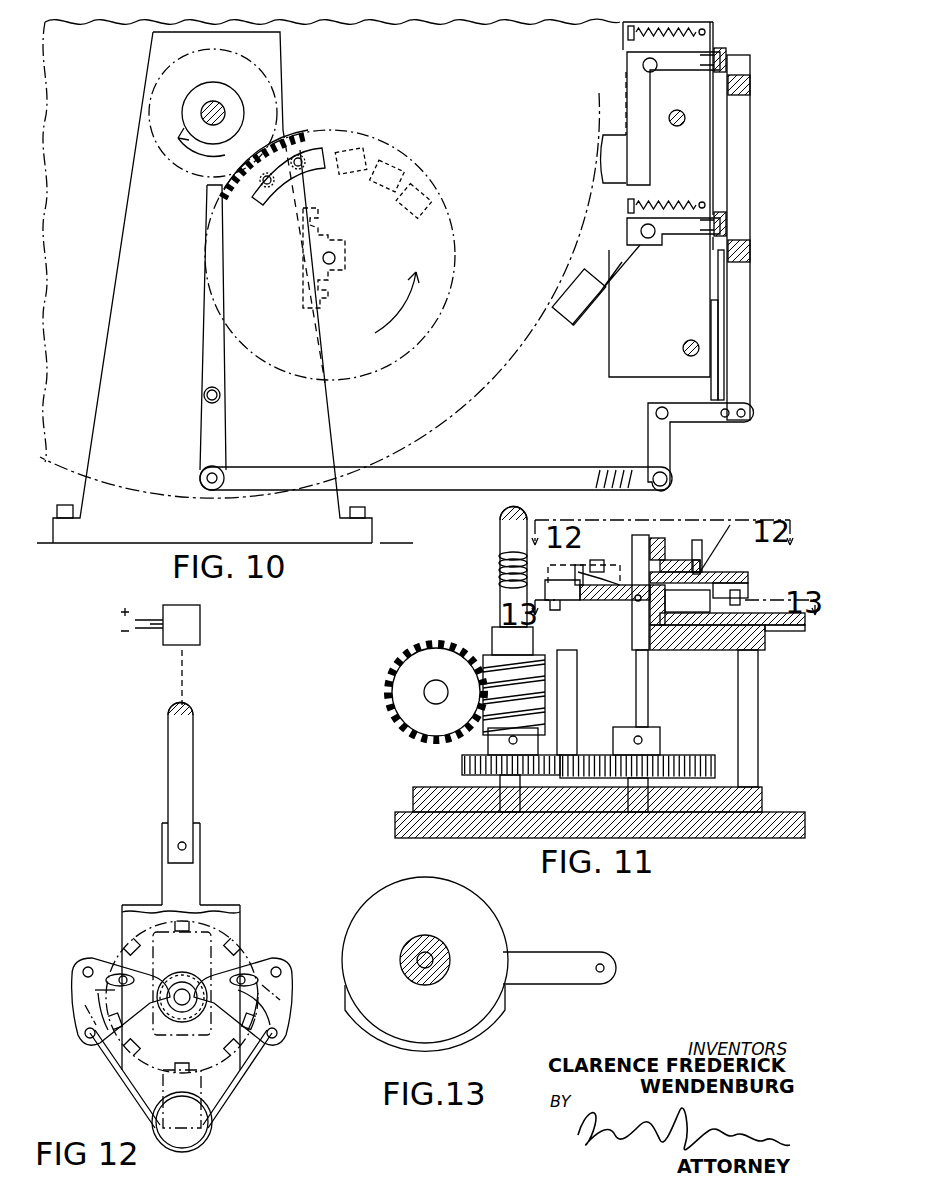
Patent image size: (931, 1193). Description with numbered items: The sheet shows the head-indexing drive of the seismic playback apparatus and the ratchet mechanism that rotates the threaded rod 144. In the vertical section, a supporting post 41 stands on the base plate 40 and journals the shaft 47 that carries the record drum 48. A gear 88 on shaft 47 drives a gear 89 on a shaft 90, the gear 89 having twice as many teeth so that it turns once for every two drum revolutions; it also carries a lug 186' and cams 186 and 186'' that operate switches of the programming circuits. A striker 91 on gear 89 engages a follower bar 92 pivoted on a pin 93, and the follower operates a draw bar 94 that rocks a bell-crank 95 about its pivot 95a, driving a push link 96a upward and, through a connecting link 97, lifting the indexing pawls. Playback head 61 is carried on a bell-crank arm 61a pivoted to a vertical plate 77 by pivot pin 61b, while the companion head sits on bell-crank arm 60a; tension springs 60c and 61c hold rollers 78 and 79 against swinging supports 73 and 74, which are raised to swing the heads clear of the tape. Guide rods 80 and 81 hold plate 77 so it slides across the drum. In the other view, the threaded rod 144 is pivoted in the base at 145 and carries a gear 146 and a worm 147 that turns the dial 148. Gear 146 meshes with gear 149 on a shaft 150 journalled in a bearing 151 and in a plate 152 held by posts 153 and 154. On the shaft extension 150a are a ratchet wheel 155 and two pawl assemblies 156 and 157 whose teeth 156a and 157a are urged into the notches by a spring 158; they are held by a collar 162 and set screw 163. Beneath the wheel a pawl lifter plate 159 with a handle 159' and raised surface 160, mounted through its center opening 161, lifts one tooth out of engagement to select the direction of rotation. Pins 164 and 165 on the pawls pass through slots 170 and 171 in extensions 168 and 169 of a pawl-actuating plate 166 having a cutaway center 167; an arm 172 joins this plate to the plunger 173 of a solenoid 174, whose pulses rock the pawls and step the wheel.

In FIG. 10, the base plate 40 is at (400, 543).
In FIG. 11, the base plate 40 is at (738, 838).
In FIG. 10, the supporting post 41 is at (280, 58).
In FIG. 10, the shaft 47 is at (208, 110).
In FIG. 10, the drum 48 is at (440, 428).
In FIG. 10, the bell-crank arm 60a is at (643, 130).
In FIG. 10, the tension spring 60c is at (705, 32).
In FIG. 10, the playback head 61 is at (575, 318).
In FIG. 10, the bell-crank arm 61a is at (612, 280).
In FIG. 10, the pivot pin 61b is at (648, 240).
In FIG. 10, the tension spring 61c is at (645, 205).
In FIG. 10, the swinging support 73 is at (752, 92).
In FIG. 10, the swinging support 74 is at (752, 258).
In FIG. 10, the vertical plate 77 is at (712, 140).
In FIG. 10, the roller 78 is at (746, 62).
In FIG. 10, the roller 79 is at (748, 232).
In FIG. 10, the guide rod 80 is at (682, 116).
In FIG. 10, the guide rod 81 is at (688, 355).
In FIG. 10, the gear 88 is at (280, 130).
In FIG. 10, the gear 89 is at (372, 160).
In FIG. 10, the shaft 90 is at (336, 256).
In FIG. 10, the striker 91 is at (270, 186).
In FIG. 10, the follower bar 92 is at (206, 350).
In FIG. 10, the pin 93 is at (205, 398).
In FIG. 10, the draw bar 94 is at (512, 470).
In FIG. 10, the bell-crank 95 is at (671, 458).
In FIG. 10, the pivot 95a is at (656, 413).
In FIG. 10, the push link 96a is at (724, 392).
In FIG. 10, the connecting link 97 is at (722, 310).
In FIG. 10, the cam 186 is at (365, 138).
In FIG. 10, the lug 186' is at (425, 168).
In FIG. 10, the cam 186'' is at (449, 201).
In FIG. 11, the threaded rod 144 is at (500, 565).
In FIG. 11, the pivot 145 is at (510, 805).
In FIG. 11, the gear 146 is at (460, 763).
In FIG. 11, the worm 147 is at (495, 655).
In FIG. 11, the dial 148 is at (432, 655).
In FIG. 11, the gear 149 is at (682, 755).
In FIG. 11, the shaft 150 is at (650, 683).
In FIG. 11, the shaft extension 150a is at (640, 538).
In FIG. 12, the shaft extension 150a is at (182, 997).
In FIG. 11, the bearing 151 is at (640, 808).
In FIG. 11, the plate 152 is at (760, 650).
In FIG. 11, the post 153 is at (758, 690).
In FIG. 11, the post 154 is at (570, 683).
In FIG. 11, the ratchet wheel 155 is at (660, 640).
In FIG. 12, the ratchet wheel 155 is at (226, 915).
In FIG. 11, the pawl assembly 156 is at (745, 578).
In FIG. 12, the pawl assembly 156 is at (222, 975).
In FIG. 12, the movable tooth 156a is at (252, 1035).
In FIG. 11, the pawl assembly 157 is at (536, 585).
In FIG. 12, the pawl assembly 157 is at (140, 975).
In FIG. 11, the movable tooth 157a is at (590, 560).
In FIG. 12, the movable tooth 157a is at (108, 1033).
In FIG. 12, the spring 158 is at (222, 1115).
In FIG. 11, the pawl lifter plate 159 is at (785, 642).
In FIG. 13, the pawl lifter plate 159 is at (446, 960).
In FIG. 11, the handle 159' is at (796, 633).
In FIG. 13, the handle 159' is at (567, 945).
In FIG. 11, the raised surface 160 is at (742, 598).
In FIG. 13, the raised surface 160 is at (415, 1053).
In FIG. 13, the center opening 161 is at (424, 952).
In FIG. 11, the collar 162 is at (660, 540).
In FIG. 11, the set screw 163 is at (662, 560).
In FIG. 11, the pin 164 is at (705, 565).
In FIG. 12, the pin 164 is at (278, 1040).
In FIG. 11, the pin 165 is at (605, 570).
In FIG. 12, the pin 165 is at (112, 985).
In FIG. 11, the pawl-actuating plate 166 is at (680, 620).
In FIG. 12, the pawl-actuating plate 166 is at (248, 888).
In FIG. 11, the cutaway center 167 is at (585, 598).
In FIG. 12, the cutaway center 167 is at (212, 1070).
In FIG. 11, the extension 168 is at (728, 572).
In FIG. 12, the extension 168 is at (270, 995).
In FIG. 11, the extension 169 is at (575, 565).
In FIG. 12, the extension 169 is at (100, 1000).
In FIG. 12, the slot 170 is at (275, 1015).
In FIG. 11, the slot 171 is at (710, 545).
In FIG. 12, the slot 171 is at (86, 1035).
In FIG. 12, the arm 172 is at (188, 768).
In FIG. 12, the plunger 173 is at (184, 676).
In FIG. 12, the solenoid 174 is at (198, 625).